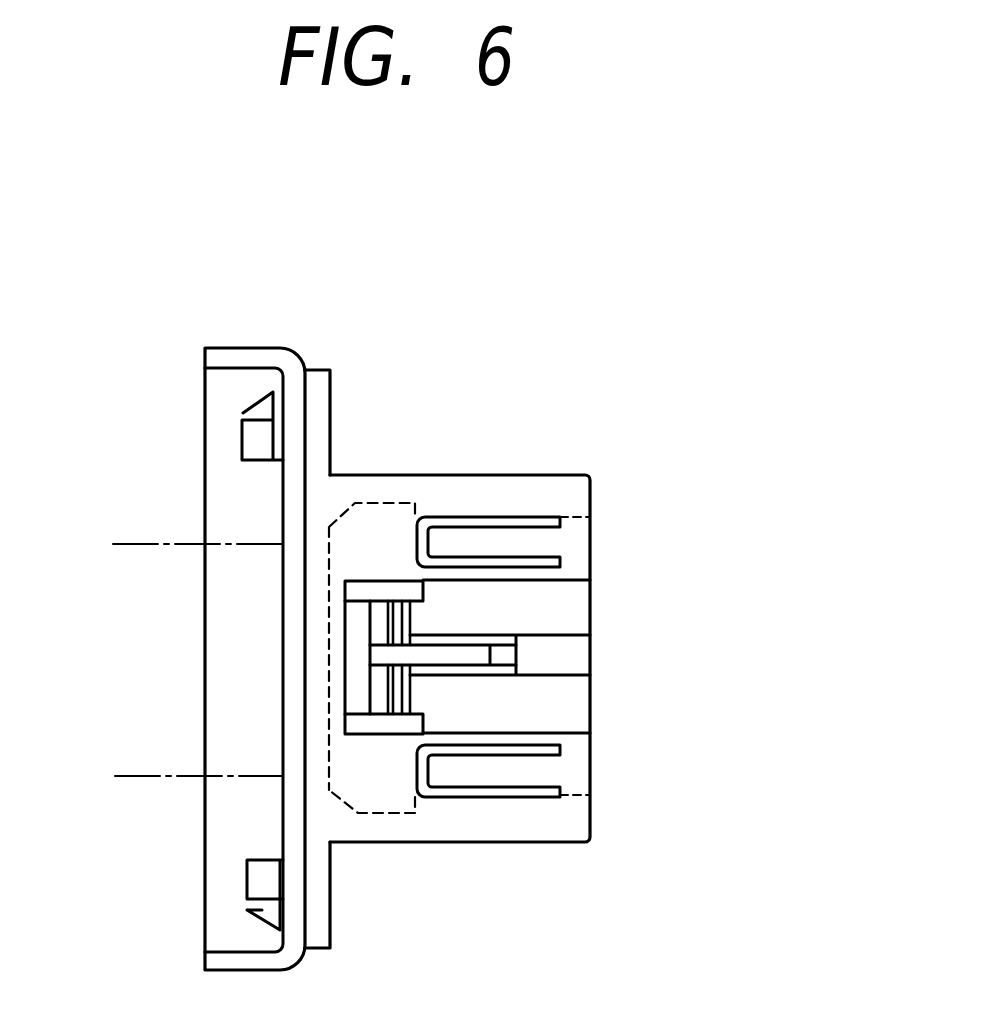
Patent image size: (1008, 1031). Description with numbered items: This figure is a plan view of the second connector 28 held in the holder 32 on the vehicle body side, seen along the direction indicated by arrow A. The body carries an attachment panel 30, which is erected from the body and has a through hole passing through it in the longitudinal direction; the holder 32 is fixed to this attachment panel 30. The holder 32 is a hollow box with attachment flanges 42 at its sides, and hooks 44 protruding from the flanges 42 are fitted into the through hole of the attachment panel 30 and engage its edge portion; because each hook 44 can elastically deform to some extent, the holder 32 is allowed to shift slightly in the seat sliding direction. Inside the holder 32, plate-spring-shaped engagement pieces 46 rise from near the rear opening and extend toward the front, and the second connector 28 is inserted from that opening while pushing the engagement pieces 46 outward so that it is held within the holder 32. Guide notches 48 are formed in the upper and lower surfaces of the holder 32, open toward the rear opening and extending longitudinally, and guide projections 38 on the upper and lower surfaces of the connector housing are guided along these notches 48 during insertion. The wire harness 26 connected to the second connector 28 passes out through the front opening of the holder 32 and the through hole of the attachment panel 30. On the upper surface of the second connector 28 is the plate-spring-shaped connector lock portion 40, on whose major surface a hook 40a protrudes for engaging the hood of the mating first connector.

The wire harness 26 is at (138, 776).
The second connector 28 is at (398, 532).
The attachment panel 30 is at (243, 385).
The holder 32 is at (517, 473).
The guide projections 38 is at (350, 590).
The connector lock portion 40 is at (412, 623).
The hook 40a is at (510, 657).
The attachment flanges 42 is at (327, 387).
The hooks 44 is at (250, 442).
The engagement pieces 46 is at (520, 538).
The guide notches 48 is at (550, 730).
The direction arrow A is at (800, 646).